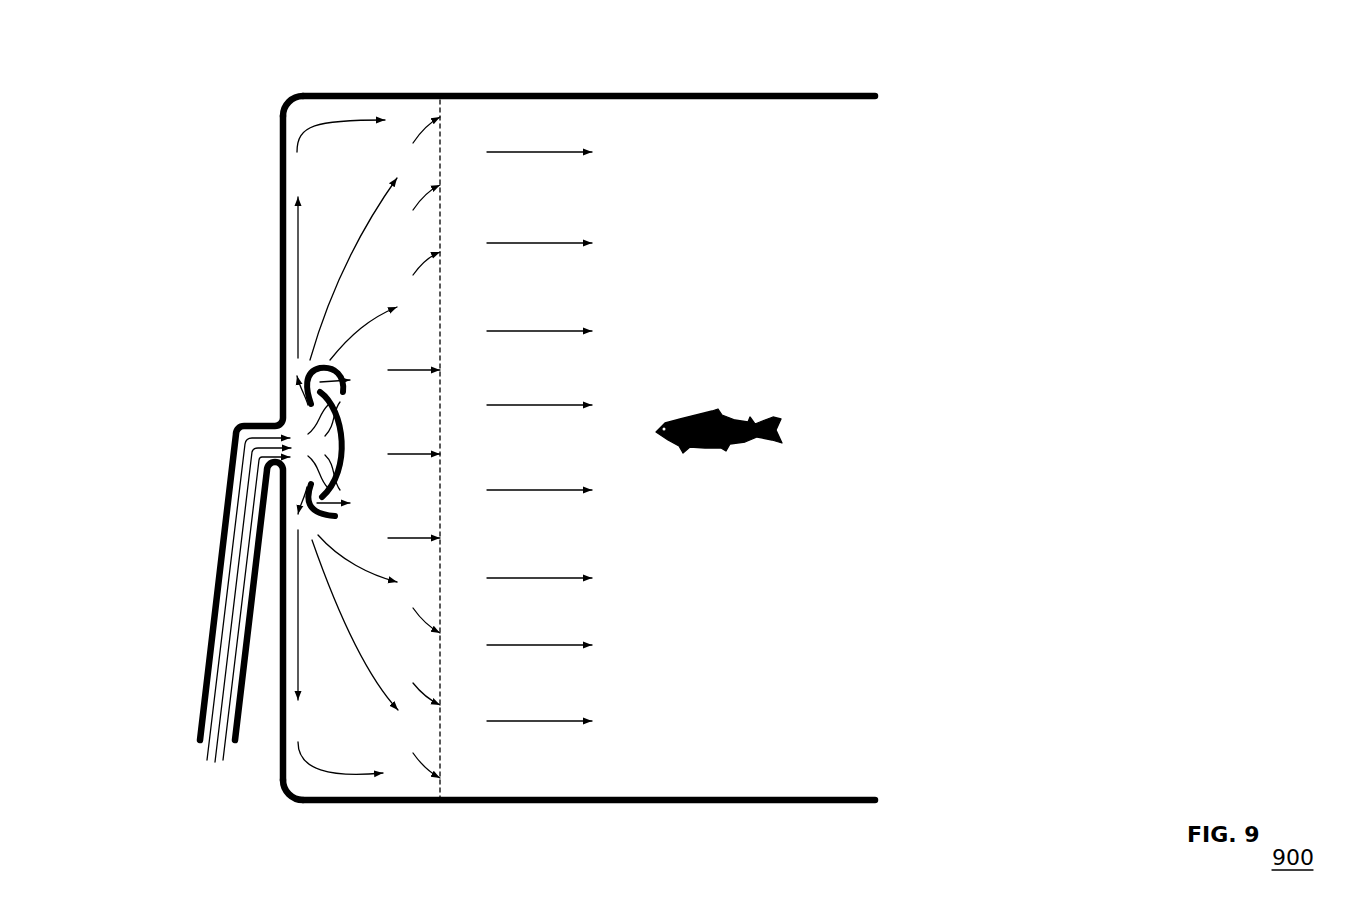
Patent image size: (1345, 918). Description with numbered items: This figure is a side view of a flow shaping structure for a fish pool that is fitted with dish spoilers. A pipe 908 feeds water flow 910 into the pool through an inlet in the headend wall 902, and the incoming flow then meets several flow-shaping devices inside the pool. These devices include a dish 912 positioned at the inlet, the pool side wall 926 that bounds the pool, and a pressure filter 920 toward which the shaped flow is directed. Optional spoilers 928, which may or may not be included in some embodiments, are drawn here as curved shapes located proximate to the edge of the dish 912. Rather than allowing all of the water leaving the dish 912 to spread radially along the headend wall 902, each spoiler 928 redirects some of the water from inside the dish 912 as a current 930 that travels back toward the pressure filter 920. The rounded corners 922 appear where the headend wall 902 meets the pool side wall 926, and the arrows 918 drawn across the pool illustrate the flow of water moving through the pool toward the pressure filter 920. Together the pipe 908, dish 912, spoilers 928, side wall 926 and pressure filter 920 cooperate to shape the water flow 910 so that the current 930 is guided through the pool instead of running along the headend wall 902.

The headend wall 902 is at (280, 277).
The pipe 908 is at (205, 703).
The water flow 910 is at (215, 750).
The dish 912 is at (282, 422).
The water flow arrows 918 is at (543, 648).
The pressure filter 920 is at (440, 744).
The rounded wall corners 922 is at (284, 99).
The pool side wall 926 is at (363, 92).
The spoiler 928 is at (305, 372).
The current 930 is at (340, 396).